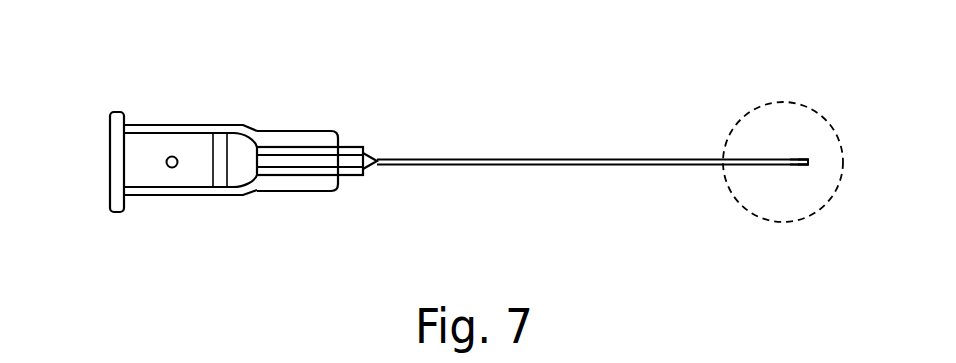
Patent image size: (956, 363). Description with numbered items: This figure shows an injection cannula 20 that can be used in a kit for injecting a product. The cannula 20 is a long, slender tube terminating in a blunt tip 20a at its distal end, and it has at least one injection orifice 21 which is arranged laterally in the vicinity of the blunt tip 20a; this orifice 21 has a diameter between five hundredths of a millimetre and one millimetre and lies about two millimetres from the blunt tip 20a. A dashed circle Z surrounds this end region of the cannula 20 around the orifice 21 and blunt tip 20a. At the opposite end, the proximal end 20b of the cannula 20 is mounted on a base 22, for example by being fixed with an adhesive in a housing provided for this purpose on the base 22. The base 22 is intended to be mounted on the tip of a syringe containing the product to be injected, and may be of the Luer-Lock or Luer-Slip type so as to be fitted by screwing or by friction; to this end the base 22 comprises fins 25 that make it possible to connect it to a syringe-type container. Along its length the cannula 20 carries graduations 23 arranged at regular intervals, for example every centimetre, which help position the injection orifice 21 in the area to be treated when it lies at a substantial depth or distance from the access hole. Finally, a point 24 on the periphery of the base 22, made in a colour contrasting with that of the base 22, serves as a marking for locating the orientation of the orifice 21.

The cannula 20 is at (605, 106).
The blunt tip 20a is at (809, 163).
The proximal end 20b is at (378, 164).
The injection orifice 21 is at (775, 160).
The base 22 is at (116, 165).
The graduations 23 is at (510, 159).
The point 24 is at (170, 156).
The fins 25 is at (293, 137).
The enlarged zone Z is at (782, 222).